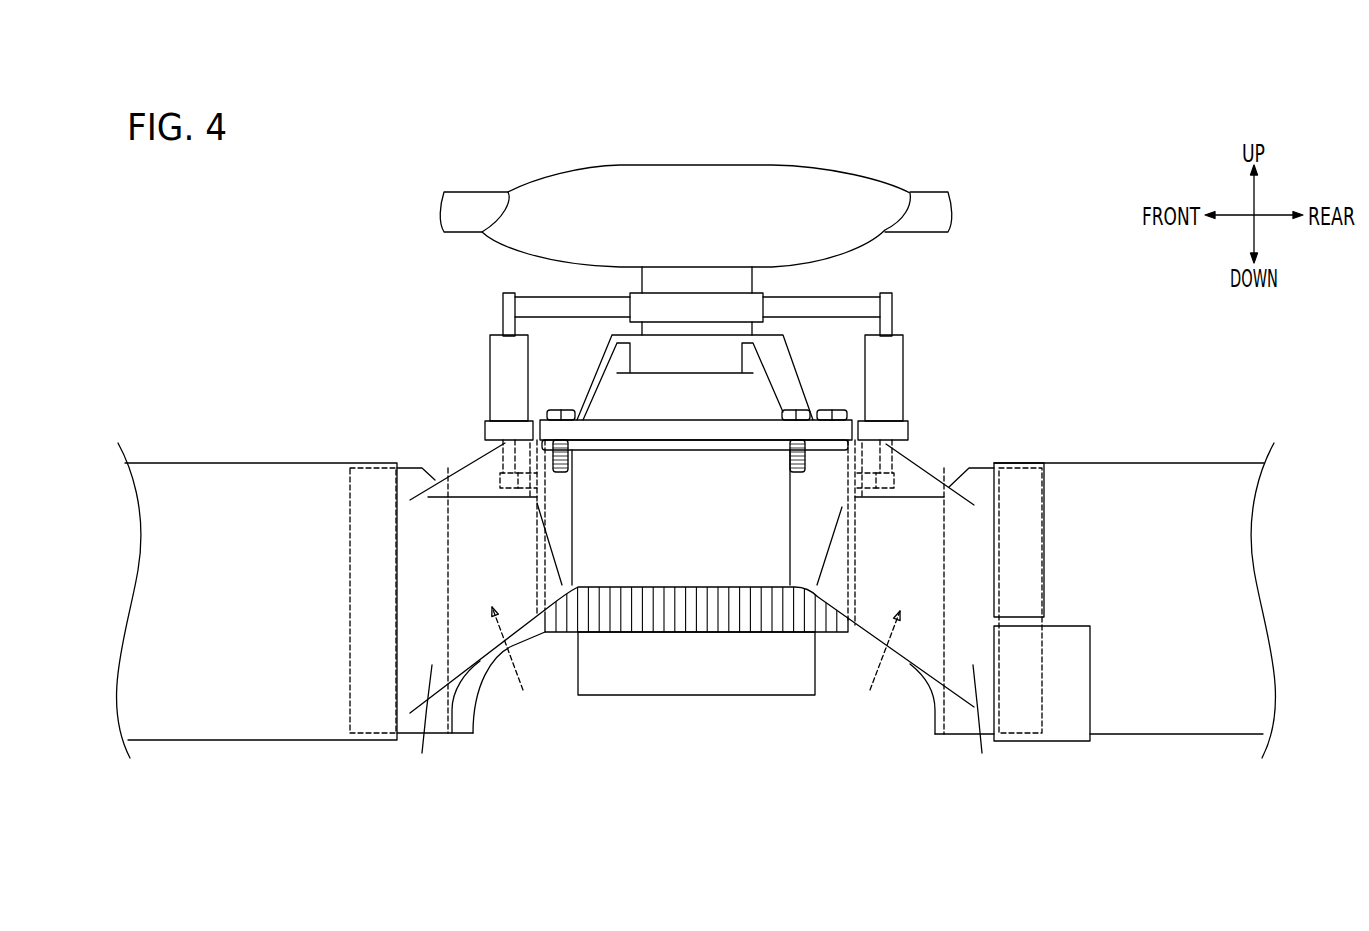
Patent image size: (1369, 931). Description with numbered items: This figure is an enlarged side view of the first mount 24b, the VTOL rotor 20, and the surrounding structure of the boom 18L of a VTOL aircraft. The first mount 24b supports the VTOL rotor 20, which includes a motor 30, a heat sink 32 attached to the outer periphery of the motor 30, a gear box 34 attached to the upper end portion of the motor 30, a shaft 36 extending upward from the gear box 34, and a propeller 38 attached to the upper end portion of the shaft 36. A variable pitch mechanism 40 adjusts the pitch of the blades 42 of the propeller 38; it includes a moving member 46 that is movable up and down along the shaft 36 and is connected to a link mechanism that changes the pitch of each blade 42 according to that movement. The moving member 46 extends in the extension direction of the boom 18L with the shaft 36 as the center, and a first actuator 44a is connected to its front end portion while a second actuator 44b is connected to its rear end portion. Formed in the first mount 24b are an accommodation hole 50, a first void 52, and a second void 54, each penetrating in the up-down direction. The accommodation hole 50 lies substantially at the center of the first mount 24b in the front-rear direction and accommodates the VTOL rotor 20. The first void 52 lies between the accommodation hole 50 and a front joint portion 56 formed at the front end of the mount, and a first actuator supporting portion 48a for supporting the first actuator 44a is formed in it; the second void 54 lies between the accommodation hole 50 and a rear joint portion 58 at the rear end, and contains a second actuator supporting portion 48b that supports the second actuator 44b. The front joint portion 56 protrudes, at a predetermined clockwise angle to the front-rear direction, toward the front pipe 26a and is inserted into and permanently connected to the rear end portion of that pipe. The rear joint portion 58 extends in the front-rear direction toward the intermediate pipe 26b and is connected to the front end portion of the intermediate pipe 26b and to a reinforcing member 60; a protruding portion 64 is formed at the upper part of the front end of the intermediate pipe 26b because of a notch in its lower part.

The boom 18L is at (1004, 412).
The VTOL rotor 20 is at (636, 149).
The propeller 38 is at (712, 178).
The blades 42 is at (468, 200).
The shaft 36 is at (722, 282).
The variable pitch mechanism 40 is at (474, 310).
The moving member 46 is at (676, 307).
The first actuator 44a is at (505, 369).
The second actuator 44b is at (888, 367).
The gear box 34 is at (610, 388).
The accommodation hole 50 is at (846, 537).
The first actuator supporting portion 48a is at (488, 478).
The second actuator supporting portion 48b is at (902, 480).
The front pipe 26a is at (185, 460).
The intermediate pipe 26b is at (1144, 459).
The protruding portion 64 is at (1029, 462).
The reinforcing member 60 is at (1074, 685).
The first mount 24b is at (725, 548).
The heat sink 32 is at (657, 632).
The motor 30 is at (767, 685).
The first void 52 is at (514, 661).
The second void 54 is at (876, 663).
The front joint portion 56 is at (422, 724).
The rear joint portion 58 is at (980, 724).